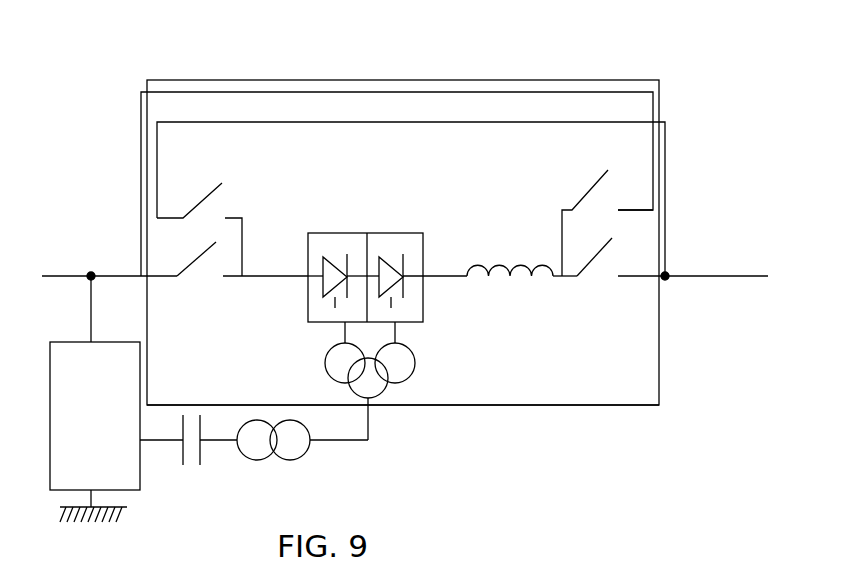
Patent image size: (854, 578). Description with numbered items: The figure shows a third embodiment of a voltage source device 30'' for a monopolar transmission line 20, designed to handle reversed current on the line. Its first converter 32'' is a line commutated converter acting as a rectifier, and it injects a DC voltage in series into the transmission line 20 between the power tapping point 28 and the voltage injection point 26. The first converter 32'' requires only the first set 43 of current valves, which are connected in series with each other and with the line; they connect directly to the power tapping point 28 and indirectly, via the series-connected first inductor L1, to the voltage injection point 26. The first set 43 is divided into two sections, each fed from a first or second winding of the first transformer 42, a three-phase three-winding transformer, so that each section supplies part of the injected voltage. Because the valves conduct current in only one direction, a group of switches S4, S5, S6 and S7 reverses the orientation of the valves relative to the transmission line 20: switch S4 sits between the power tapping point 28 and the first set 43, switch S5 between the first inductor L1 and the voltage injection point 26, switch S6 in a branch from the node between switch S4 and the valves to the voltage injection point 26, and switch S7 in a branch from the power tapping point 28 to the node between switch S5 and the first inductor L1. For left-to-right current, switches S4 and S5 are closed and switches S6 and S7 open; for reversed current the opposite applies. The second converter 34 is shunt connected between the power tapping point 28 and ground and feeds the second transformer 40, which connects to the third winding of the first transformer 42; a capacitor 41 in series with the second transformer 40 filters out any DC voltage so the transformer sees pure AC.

The transmission line 20 is at (60, 275).
The voltage injection point 26 is at (667, 276).
The power tapping point 28 is at (91, 275).
The voltage source device 30'' is at (464, 210).
The first converter 32'' is at (403, 459).
The second converter 34 is at (95, 432).
The second transformer 40 is at (302, 458).
The capacitor 41 is at (188, 457).
The first transformer 42 is at (351, 381).
The first set of current valves 43 is at (378, 233).
The switch S4 is at (242, 279).
The switch S5 is at (597, 271).
The switch S6 is at (199, 229).
The switch S7 is at (607, 223).
The first inductor L1 is at (522, 254).